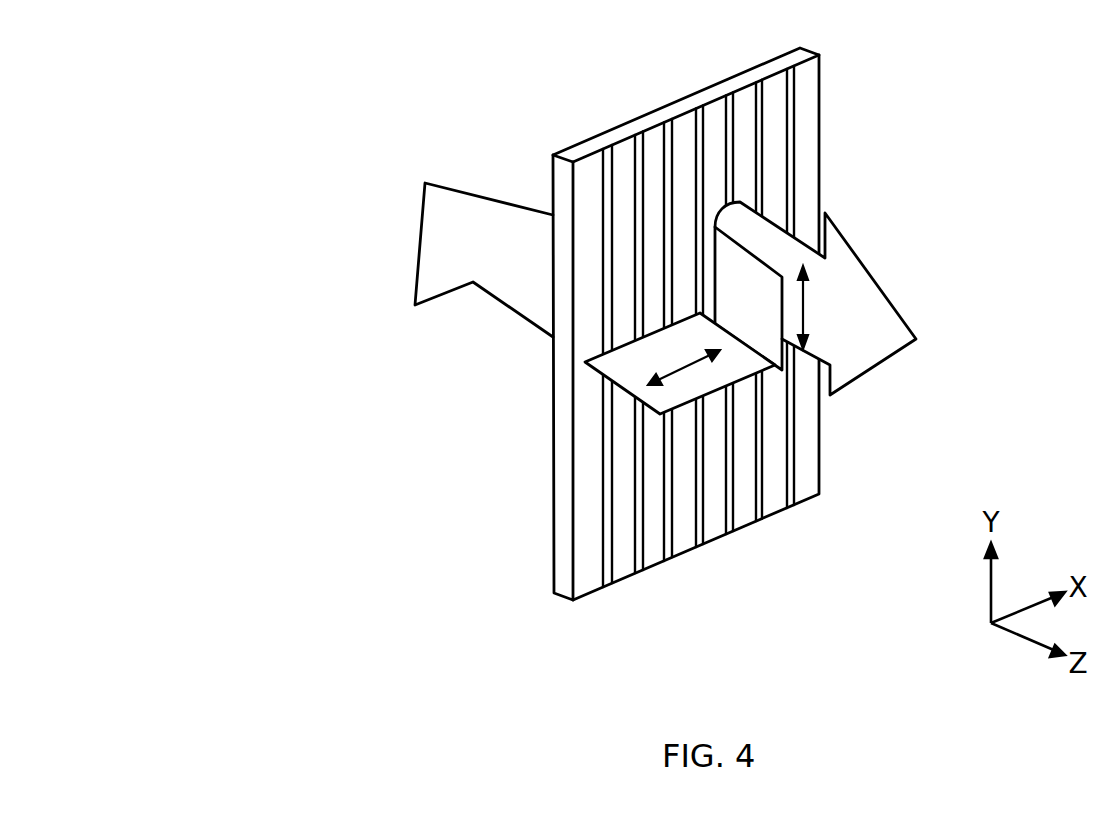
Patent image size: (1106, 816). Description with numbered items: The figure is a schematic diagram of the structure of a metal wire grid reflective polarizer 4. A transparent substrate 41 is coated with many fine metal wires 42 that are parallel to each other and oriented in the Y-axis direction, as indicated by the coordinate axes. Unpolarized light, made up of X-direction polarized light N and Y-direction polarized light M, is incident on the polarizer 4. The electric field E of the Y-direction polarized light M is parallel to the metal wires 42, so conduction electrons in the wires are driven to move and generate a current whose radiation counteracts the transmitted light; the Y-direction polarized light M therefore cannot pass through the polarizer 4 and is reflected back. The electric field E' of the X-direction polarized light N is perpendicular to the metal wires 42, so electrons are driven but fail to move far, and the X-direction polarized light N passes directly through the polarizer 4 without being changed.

The metal wire grid reflective polarizer 4 is at (246, 52).
The transparent substrate 41 is at (800, 49).
The metal wires 42 is at (792, 158).
The Y-direction polarized light M is at (763, 313).
The X-direction polarized light N is at (637, 373).
The electric field E is at (816, 307).
The electric field E' is at (684, 360).